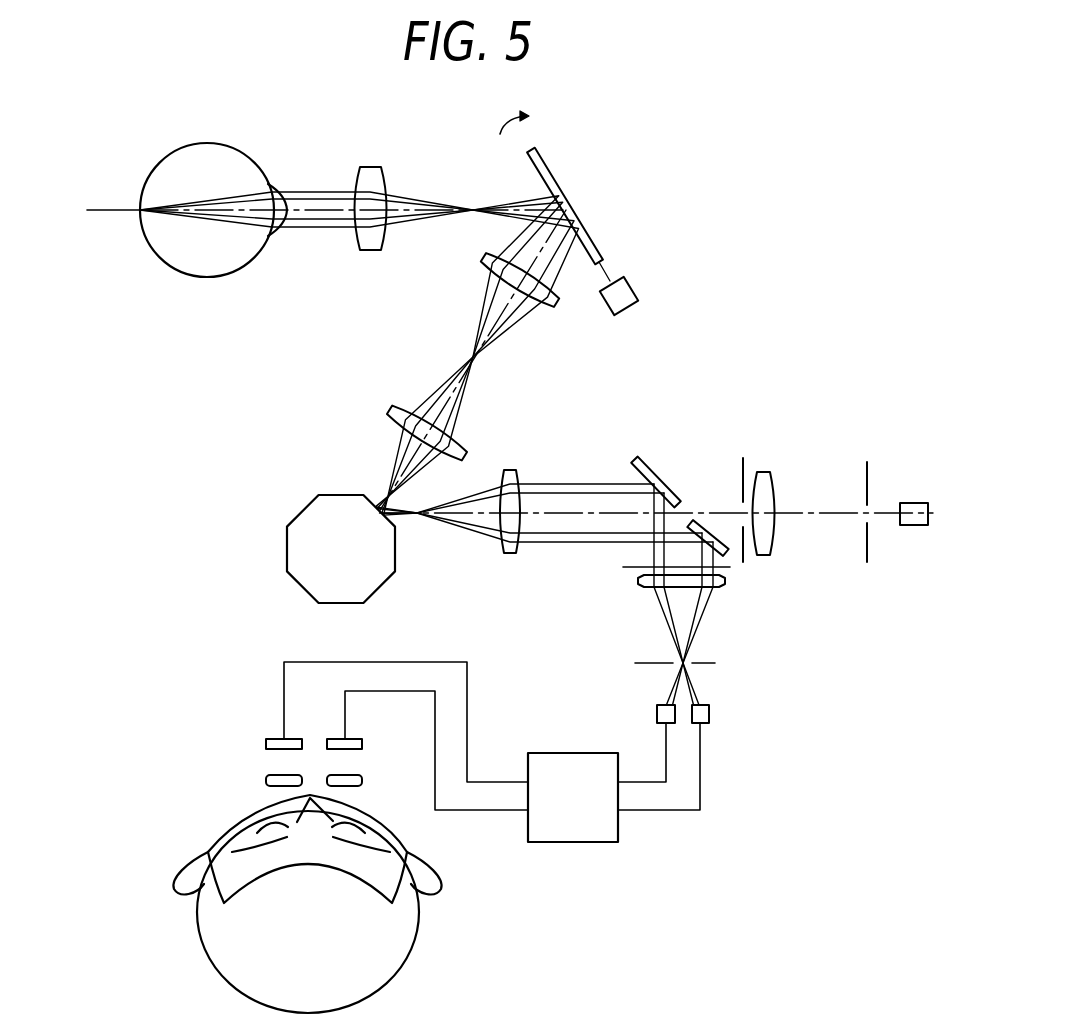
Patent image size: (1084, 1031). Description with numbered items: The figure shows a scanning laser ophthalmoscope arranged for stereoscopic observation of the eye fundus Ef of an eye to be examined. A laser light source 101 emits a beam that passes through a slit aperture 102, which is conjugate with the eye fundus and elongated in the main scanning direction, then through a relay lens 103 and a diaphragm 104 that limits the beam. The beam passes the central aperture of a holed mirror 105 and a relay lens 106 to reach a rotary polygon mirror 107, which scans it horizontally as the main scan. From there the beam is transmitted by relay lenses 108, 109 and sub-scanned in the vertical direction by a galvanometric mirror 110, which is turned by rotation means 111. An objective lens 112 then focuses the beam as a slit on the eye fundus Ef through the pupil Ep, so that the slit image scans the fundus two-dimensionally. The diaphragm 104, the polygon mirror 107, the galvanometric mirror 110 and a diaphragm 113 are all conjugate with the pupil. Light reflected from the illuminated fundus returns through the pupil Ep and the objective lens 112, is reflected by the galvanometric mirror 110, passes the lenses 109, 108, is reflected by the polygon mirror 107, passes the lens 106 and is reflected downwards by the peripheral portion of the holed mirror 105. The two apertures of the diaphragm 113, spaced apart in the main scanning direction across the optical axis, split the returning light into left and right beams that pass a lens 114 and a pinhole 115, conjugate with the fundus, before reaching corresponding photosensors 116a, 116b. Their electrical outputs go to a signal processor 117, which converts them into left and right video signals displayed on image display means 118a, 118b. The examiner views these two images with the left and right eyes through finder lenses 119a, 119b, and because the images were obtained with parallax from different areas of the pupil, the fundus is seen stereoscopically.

The eye fundus Ef is at (141, 237).
The pupil Ep is at (274, 186).
The laser light source 101 is at (919, 503).
The slit aperture 102 is at (868, 469).
The relay lens 103 is at (763, 473).
The diaphragm 104 is at (743, 460).
The holed mirror 105 is at (640, 466).
The relay lens 106 is at (521, 471).
The rotary polygon mirror 107 is at (286, 549).
The relay lens 108 is at (386, 411).
The relay lens 109 is at (484, 266).
The galvanometric mirror 110 is at (541, 153).
The rotation means 111 is at (640, 301).
The objective lens 112 is at (373, 167).
The diaphragm 113 is at (731, 568).
The condenser lens 114 is at (726, 584).
The pinhole 115 is at (716, 663).
The photosensor 116a is at (656, 715).
The photosensor 116b is at (710, 715).
The signal processor 117 is at (590, 844).
The image display means 118a is at (266, 740).
The image display means 118b is at (363, 740).
The finder lens 119a is at (266, 778).
The finder lens 119b is at (363, 778).